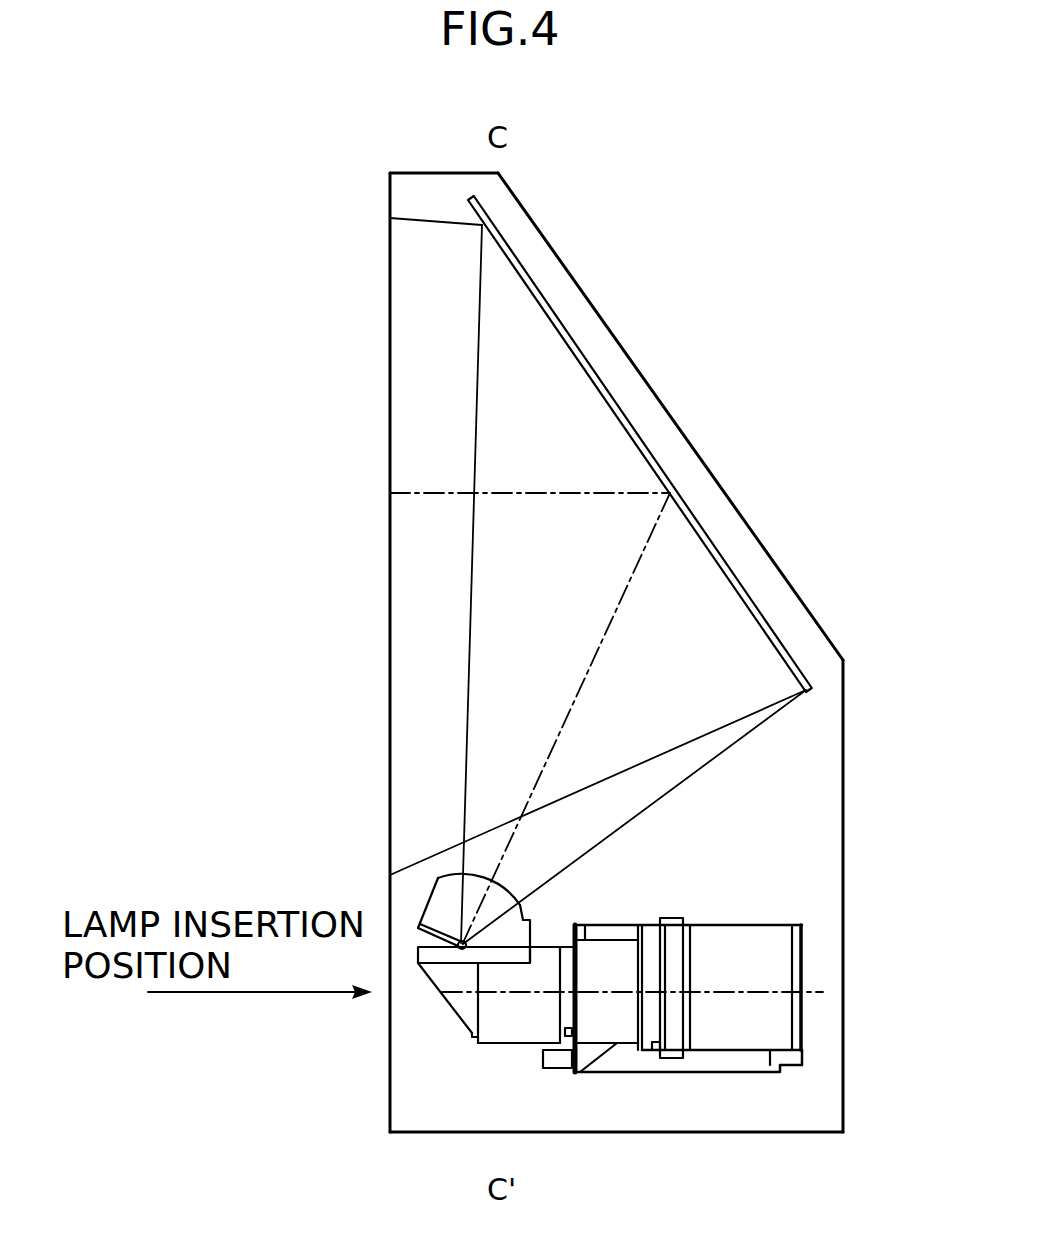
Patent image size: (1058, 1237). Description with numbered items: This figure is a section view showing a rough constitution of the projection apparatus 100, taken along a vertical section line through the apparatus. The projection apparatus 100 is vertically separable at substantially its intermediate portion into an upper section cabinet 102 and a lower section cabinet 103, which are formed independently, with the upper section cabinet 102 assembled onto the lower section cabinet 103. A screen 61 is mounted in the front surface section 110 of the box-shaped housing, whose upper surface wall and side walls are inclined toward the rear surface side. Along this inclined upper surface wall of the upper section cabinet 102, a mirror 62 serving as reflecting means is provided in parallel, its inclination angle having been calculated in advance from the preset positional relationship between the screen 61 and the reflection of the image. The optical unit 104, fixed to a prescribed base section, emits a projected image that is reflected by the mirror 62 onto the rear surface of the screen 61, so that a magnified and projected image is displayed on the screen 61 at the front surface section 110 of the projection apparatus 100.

The projection apparatus 100 is at (750, 306).
The screen 61 is at (390, 362).
The mirror 62 is at (700, 512).
The upper section cabinet 102 is at (812, 615).
The lower section cabinet 103 is at (390, 1093).
The optical unit 104 is at (815, 949).
The front surface section 110 is at (388, 202).